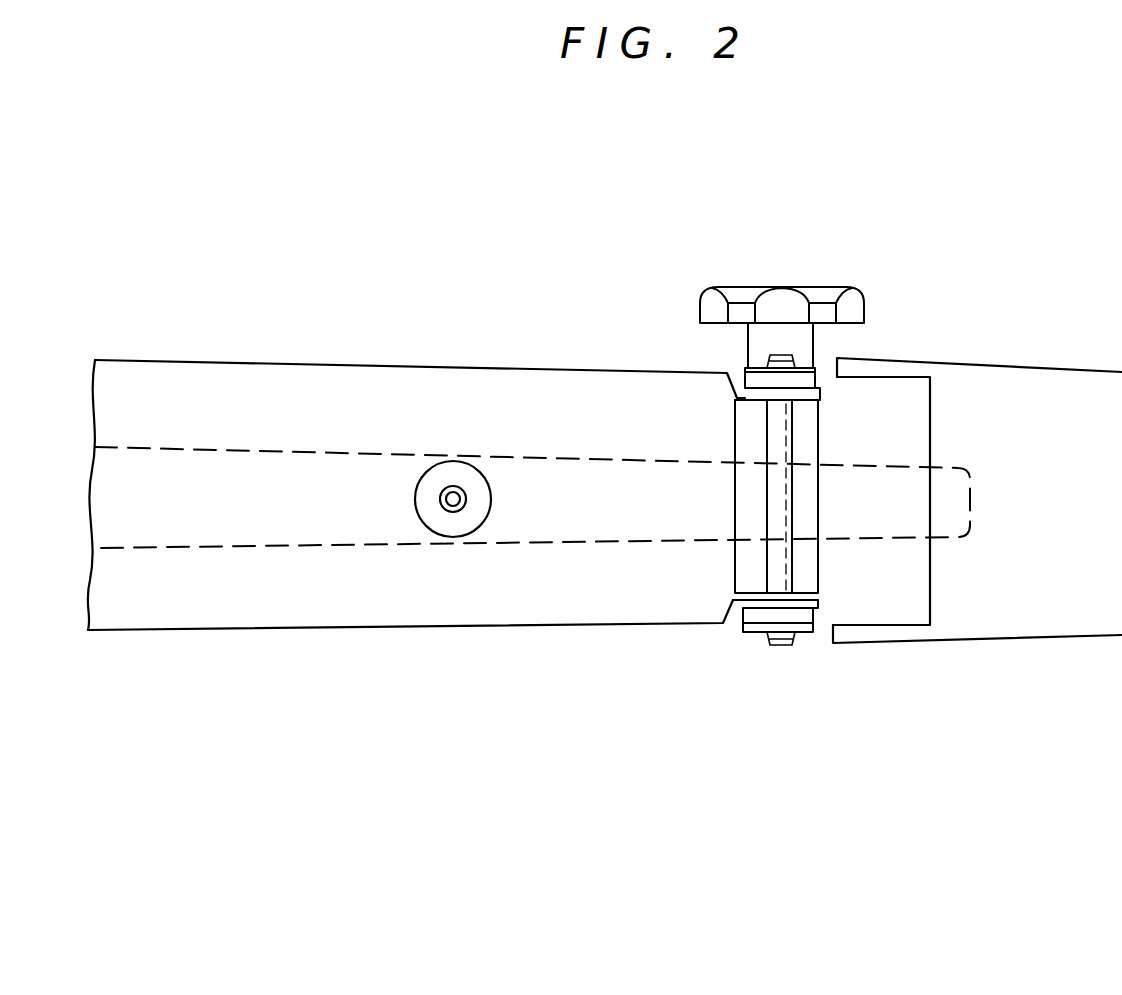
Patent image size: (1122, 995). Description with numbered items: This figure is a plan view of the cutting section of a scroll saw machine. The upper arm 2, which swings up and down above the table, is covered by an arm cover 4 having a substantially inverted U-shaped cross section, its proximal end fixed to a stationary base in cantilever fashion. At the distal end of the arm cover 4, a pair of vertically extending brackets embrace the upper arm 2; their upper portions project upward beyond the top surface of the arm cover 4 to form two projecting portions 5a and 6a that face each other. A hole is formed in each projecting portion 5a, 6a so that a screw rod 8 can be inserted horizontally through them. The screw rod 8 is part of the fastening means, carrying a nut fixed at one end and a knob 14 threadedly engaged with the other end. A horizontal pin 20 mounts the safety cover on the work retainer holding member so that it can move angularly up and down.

The upper arm 2 is at (316, 546).
The arm cover 4 is at (347, 365).
The projecting portion 5a is at (805, 600).
The projecting portion 6a is at (807, 394).
The screw rod 8 is at (768, 558).
The knob 14 is at (745, 287).
The horizontal pin 20 is at (783, 354).